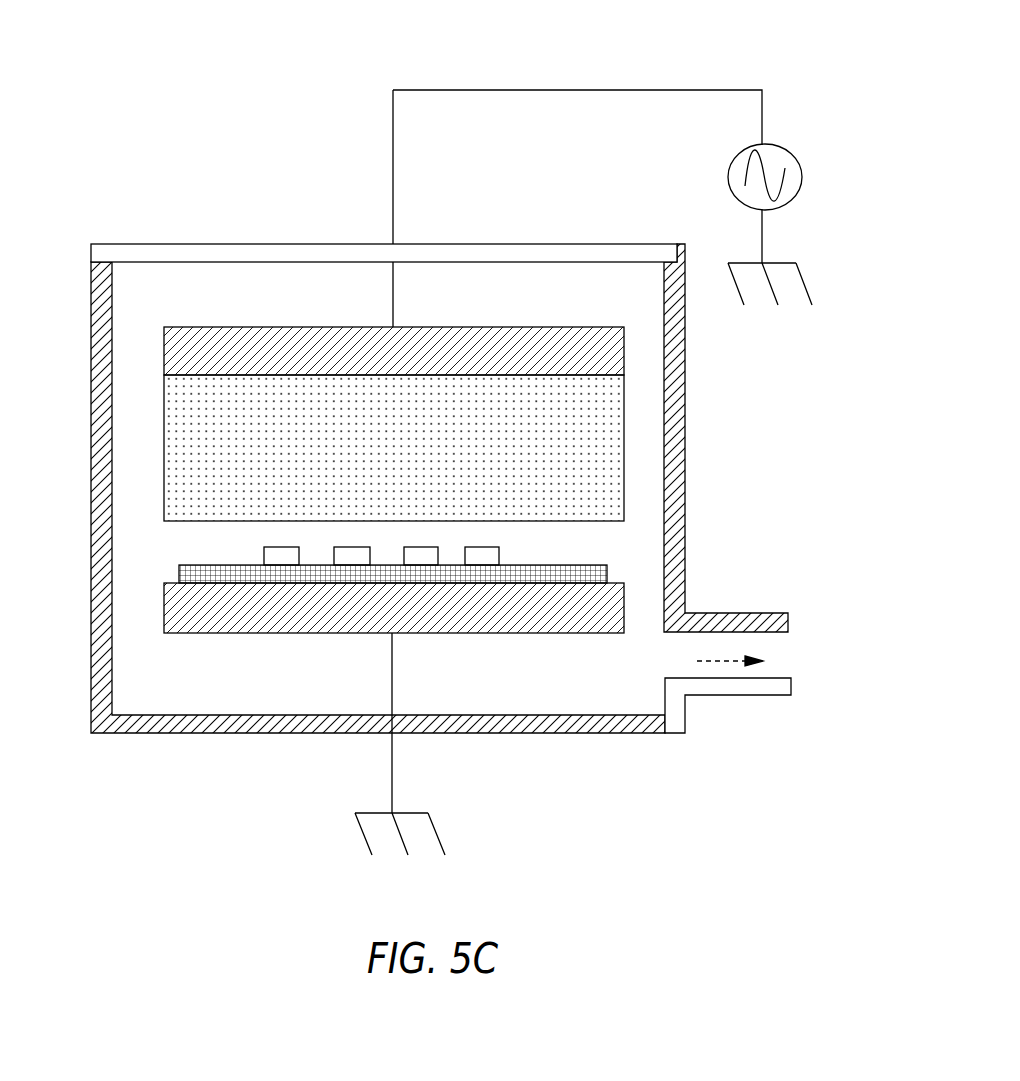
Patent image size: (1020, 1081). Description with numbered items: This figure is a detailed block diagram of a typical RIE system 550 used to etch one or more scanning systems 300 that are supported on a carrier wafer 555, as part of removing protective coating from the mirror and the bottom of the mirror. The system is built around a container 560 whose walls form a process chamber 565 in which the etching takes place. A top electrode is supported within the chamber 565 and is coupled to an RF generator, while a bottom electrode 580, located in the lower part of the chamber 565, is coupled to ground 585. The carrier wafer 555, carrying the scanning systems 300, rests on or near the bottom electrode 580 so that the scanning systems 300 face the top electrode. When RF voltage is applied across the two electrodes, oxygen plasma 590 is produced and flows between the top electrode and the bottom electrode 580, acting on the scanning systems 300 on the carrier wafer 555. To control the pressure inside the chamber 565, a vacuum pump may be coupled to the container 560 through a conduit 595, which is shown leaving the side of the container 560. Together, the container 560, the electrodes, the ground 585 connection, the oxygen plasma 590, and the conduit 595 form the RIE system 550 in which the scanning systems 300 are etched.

The RIE system 550 is at (782, 36).
The container 560 is at (138, 243).
The process chamber 565 is at (164, 420).
The oxygen plasma 590 is at (624, 406).
The scanning systems 300 is at (280, 547).
The carrier wafer 555 is at (607, 580).
The bottom electrode 580 is at (462, 633).
The ground 585 is at (412, 813).
The conduit 595 is at (740, 695).